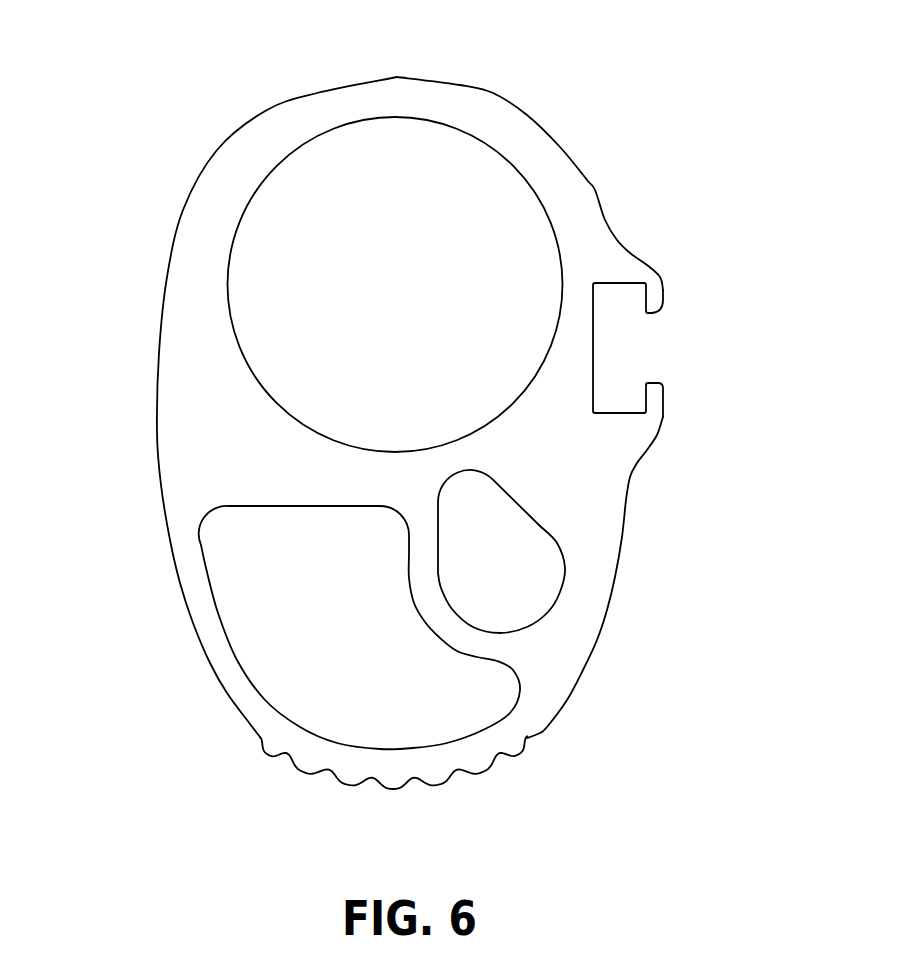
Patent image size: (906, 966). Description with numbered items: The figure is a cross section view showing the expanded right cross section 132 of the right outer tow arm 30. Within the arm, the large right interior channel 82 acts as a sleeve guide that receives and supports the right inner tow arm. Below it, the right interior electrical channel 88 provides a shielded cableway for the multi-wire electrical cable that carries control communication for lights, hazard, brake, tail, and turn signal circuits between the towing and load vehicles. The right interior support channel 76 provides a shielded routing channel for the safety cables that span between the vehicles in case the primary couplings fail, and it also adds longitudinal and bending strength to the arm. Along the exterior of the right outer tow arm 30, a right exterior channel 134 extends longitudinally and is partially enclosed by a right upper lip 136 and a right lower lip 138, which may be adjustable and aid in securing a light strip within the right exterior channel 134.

The right outer tow arm 30 is at (643, 83).
The right interior channel 82 is at (325, 155).
The right cross section 132 is at (192, 445).
The right exterior channel 134 is at (630, 353).
The right upper lip 136 is at (657, 285).
The right lower lip 138 is at (657, 407).
The right interior electrical channel 88 is at (535, 590).
The right interior support channel 76 is at (478, 705).